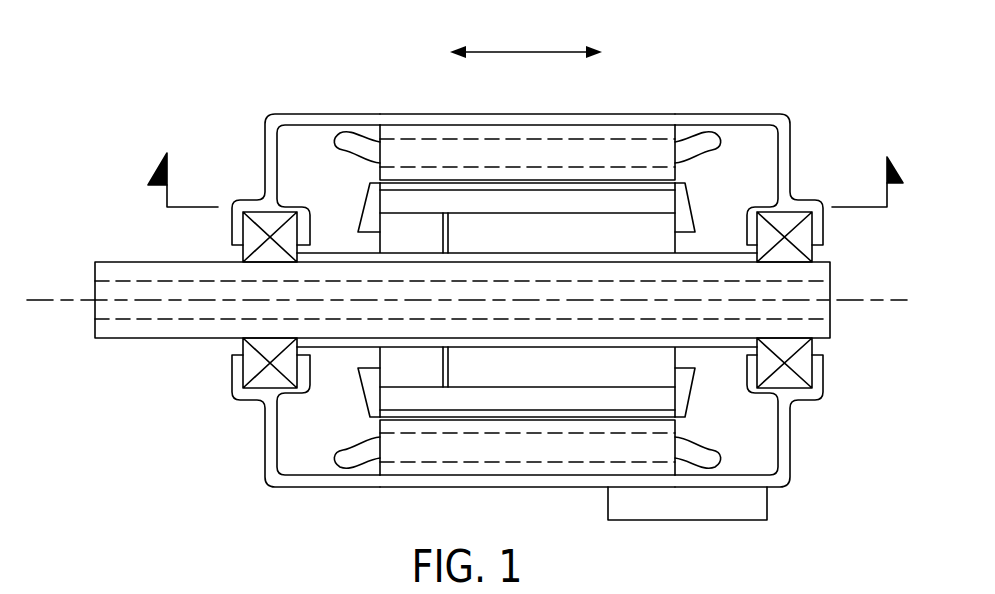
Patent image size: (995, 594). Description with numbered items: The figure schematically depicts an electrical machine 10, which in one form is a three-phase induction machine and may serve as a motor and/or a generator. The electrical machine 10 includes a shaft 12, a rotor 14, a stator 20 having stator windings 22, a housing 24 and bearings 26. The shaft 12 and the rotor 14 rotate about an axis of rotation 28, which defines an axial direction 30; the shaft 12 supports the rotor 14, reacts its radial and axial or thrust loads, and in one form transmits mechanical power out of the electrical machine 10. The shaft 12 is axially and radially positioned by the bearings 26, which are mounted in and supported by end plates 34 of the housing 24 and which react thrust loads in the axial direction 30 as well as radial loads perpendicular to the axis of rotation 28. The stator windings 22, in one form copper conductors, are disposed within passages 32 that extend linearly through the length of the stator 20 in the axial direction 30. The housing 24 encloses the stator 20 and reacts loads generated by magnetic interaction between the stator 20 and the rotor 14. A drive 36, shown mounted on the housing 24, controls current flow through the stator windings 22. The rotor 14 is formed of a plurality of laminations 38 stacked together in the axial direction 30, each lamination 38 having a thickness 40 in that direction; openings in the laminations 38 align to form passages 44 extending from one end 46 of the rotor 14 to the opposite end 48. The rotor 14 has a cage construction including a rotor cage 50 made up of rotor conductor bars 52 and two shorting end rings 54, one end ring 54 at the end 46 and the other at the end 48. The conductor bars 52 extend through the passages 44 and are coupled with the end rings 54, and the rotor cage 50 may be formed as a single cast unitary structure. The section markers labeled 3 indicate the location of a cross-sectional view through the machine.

The electrical machine 10 is at (174, 58).
The shaft 12 is at (120, 262).
The rotor 14 is at (343, 408).
The stator 20 is at (380, 167).
The stator windings 22 is at (718, 132).
The housing 24 is at (533, 113).
The bearings 26 is at (243, 257).
The axis of rotation 28 is at (42, 298).
The axial direction 30 is at (532, 51).
The passages 32 is at (425, 462).
The end plates 34 is at (263, 448).
The drive 36 is at (607, 512).
The laminations 38 is at (569, 380).
The thickness 40 is at (407, 235).
The passages 44 is at (535, 385).
The end 46 is at (351, 235).
The end 48 is at (707, 236).
The rotor cage 50 is at (721, 193).
The rotor conductor bars 52 is at (569, 213).
The end rings 54 is at (359, 378).
The section line 3- 3 is at (525, 160).